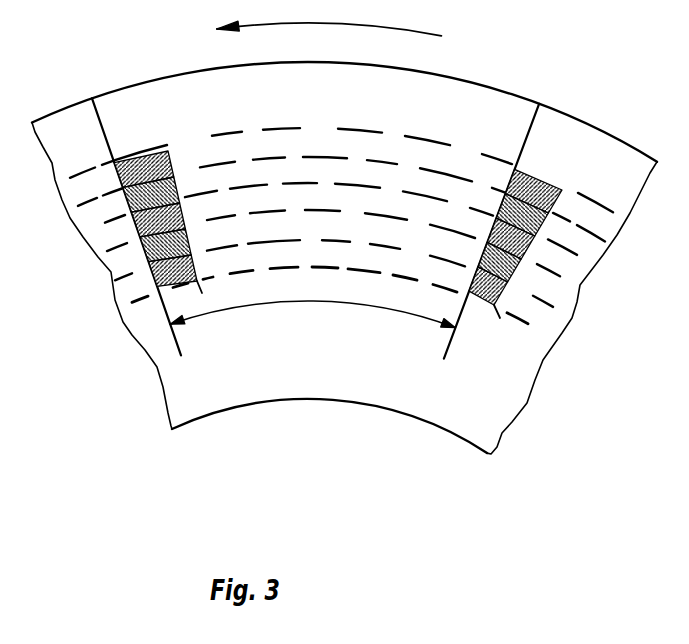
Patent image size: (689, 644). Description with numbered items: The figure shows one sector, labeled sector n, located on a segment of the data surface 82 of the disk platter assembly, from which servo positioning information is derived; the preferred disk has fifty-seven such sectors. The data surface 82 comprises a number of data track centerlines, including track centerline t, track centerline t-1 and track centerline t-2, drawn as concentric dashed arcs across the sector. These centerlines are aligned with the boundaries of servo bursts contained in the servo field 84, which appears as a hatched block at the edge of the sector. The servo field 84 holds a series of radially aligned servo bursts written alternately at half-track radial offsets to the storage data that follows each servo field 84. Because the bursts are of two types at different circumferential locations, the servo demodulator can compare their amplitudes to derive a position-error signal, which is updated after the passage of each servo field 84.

The data surface 82 is at (68, 106).
The servo field 84 is at (163, 133).
The data track centerline t is at (298, 170).
The data track centerline t-1 is at (270, 208).
The data track centerline t-2 is at (298, 239).
The sector n is at (266, 306).